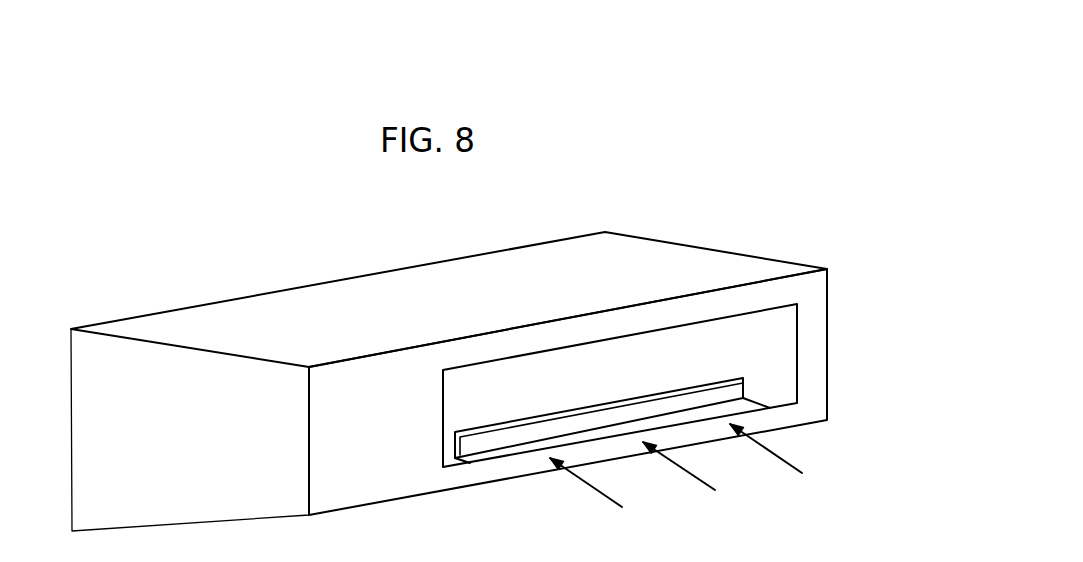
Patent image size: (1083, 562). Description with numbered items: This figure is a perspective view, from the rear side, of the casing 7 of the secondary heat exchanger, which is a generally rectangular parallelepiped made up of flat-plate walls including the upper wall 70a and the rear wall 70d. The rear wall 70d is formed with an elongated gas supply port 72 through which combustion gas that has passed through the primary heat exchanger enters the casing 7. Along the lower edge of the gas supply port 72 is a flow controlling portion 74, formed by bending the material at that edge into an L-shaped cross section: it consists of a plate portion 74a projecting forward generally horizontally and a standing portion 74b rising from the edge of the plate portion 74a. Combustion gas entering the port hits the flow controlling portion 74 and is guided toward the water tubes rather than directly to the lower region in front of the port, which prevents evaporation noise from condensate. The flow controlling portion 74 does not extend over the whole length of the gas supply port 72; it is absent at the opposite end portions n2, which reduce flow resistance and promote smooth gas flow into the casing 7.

The casing 7 is at (664, 237).
The upper wall 70a is at (692, 261).
The rear wall 70d is at (813, 349).
The gas supply port 72 is at (775, 335).
The flow controlling portion 74 is at (762, 386).
The plate portion 74a is at (505, 453).
The standing portion 74b is at (497, 432).
The end portions n2 is at (452, 460).